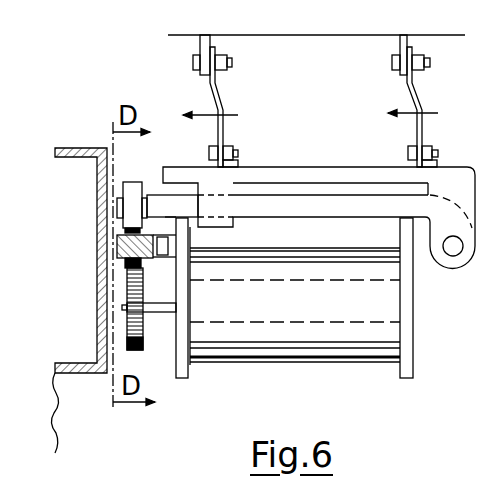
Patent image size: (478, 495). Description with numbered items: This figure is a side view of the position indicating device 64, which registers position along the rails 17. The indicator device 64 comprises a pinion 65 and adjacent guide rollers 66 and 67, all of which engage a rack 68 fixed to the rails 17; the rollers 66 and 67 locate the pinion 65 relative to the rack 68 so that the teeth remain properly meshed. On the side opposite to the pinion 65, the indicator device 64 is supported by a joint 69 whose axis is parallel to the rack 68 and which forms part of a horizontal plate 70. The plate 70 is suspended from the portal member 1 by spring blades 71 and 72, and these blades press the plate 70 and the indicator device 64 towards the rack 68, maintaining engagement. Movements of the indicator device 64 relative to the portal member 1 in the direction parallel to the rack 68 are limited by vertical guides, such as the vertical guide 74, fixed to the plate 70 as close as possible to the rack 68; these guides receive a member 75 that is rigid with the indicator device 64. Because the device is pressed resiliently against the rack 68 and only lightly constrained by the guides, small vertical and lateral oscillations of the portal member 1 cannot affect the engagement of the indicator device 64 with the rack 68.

The portal member 1 is at (443, 37).
The rails 17 is at (76, 148).
The position indicating device 64 is at (317, 350).
The pinion 65 is at (143, 337).
The guide roller 66 is at (129, 195).
The guide roller 67 is at (160, 256).
The rack 68 is at (118, 243).
The joint 69 is at (452, 256).
The horizontal plate 70 is at (311, 172).
The spring blade 71 is at (221, 100).
The spring blade 72 is at (418, 100).
The vertical guide 74 is at (218, 226).
The member 75 is at (340, 207).